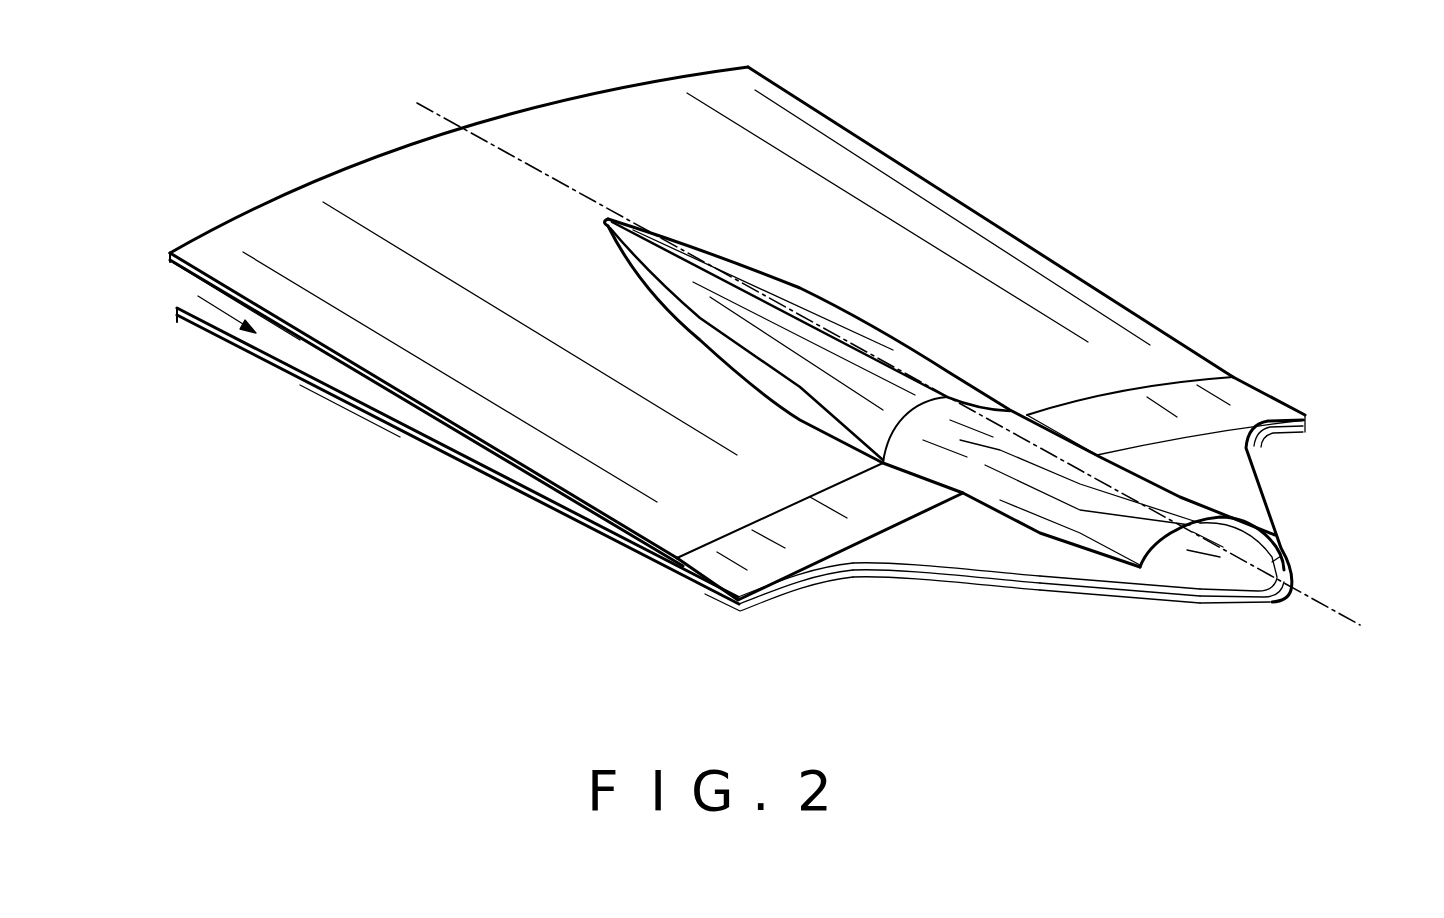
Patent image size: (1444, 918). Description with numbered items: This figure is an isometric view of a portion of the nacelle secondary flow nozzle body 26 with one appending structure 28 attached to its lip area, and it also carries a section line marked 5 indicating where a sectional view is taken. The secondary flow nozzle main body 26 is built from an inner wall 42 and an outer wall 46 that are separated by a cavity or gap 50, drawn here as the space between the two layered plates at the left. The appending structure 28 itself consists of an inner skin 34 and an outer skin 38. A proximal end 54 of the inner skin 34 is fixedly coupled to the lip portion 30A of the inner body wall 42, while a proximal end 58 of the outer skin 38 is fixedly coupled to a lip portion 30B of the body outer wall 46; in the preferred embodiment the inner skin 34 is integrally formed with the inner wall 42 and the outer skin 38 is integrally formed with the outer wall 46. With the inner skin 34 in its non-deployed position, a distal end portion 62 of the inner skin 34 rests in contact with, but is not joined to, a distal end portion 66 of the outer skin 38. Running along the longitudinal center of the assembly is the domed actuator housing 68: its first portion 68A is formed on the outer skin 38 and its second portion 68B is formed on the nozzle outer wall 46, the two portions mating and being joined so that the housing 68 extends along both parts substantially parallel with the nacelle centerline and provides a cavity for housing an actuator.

The section line 5- 5 is at (417, 103).
The nacelle secondary flow nozzle body 26 is at (1060, 182).
The appending structure 28 is at (1318, 503).
The lip portion of the inner body wall 30A is at (707, 596).
The lip portion of the body outer wall 30B is at (1244, 403).
The inner skin 34 is at (1072, 592).
The outer skin 38 is at (1006, 572).
The inner wall 42 is at (342, 405).
The outer wall 46 is at (265, 308).
The cavity or gap 50 is at (213, 293).
The proximal end of the inner skin 54 is at (812, 588).
The proximal end of the outer skin 58 is at (1308, 426).
The distal end portion of the inner skin 62 is at (1233, 607).
The distal end portion of the outer skin 66 is at (1293, 567).
The domed actuator housing 68 is at (636, 205).
The first portion of the domed actuator housing 68A is at (975, 463).
The second portion of the domed actuator housing 68B is at (792, 342).